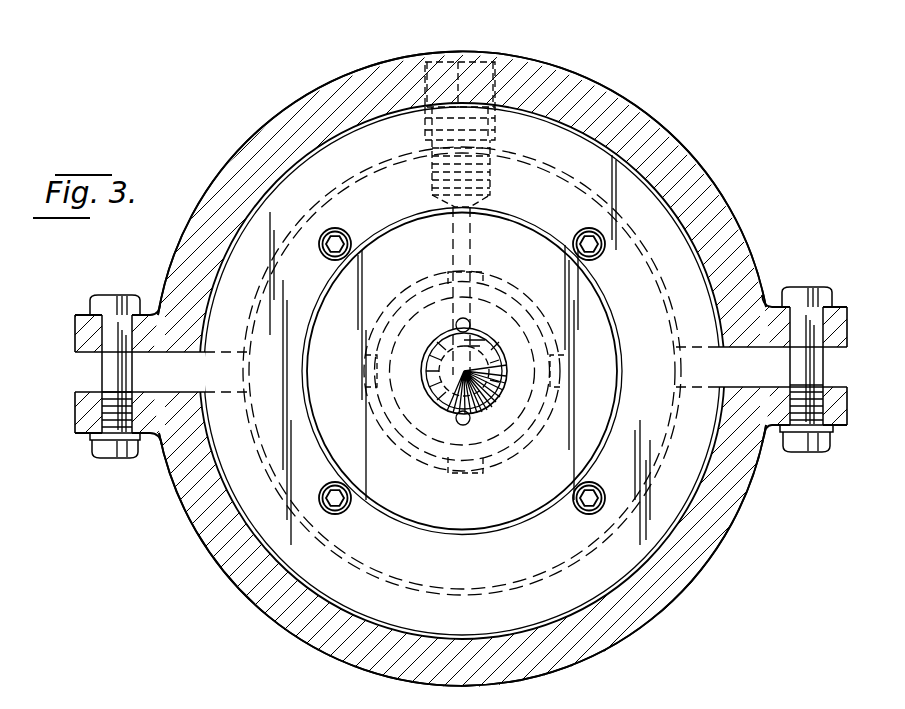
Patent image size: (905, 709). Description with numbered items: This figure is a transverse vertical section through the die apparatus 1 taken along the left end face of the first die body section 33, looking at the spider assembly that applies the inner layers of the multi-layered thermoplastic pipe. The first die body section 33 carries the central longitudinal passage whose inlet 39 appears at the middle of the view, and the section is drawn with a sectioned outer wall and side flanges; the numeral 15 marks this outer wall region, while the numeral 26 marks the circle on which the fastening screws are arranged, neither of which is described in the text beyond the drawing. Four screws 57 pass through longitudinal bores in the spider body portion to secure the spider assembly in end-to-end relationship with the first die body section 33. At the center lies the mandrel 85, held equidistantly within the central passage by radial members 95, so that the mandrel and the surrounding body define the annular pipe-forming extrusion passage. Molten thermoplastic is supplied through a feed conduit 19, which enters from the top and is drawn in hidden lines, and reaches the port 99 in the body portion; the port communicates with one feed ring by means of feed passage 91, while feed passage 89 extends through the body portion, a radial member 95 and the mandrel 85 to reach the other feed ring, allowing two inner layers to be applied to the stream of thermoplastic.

The die apparatus 1 is at (232, 140).
The housing 15 is at (185, 253).
The feed conduit 19 is at (500, 63).
The bolt circle 26 is at (330, 198).
The first die body section 33 is at (437, 568).
The inlet 39 is at (430, 371).
The screws 57 is at (322, 246).
The mandrel 85 is at (453, 358).
The feed passage 89 is at (470, 333).
The feed passage 91 is at (455, 412).
The radial members 95 is at (447, 280).
The port 99 is at (445, 200).